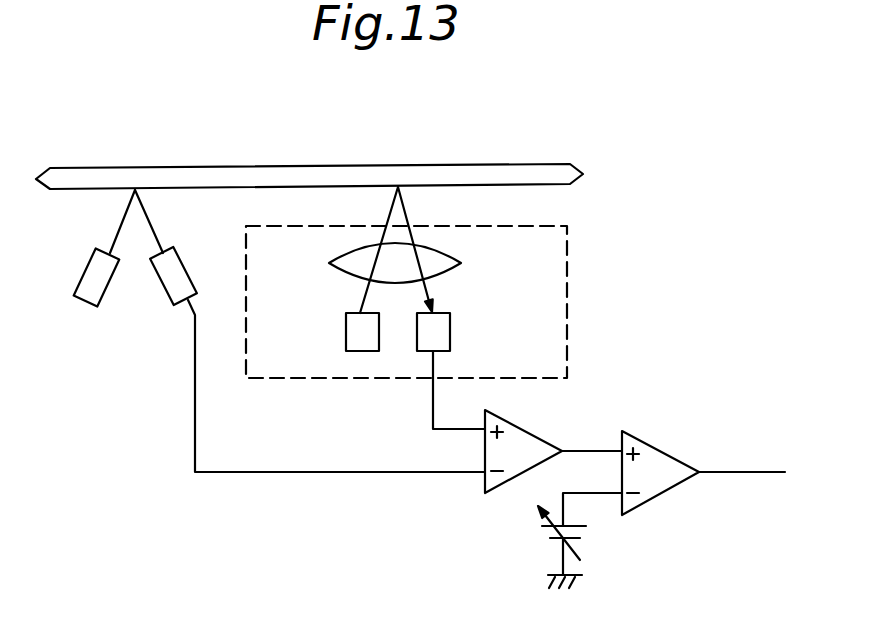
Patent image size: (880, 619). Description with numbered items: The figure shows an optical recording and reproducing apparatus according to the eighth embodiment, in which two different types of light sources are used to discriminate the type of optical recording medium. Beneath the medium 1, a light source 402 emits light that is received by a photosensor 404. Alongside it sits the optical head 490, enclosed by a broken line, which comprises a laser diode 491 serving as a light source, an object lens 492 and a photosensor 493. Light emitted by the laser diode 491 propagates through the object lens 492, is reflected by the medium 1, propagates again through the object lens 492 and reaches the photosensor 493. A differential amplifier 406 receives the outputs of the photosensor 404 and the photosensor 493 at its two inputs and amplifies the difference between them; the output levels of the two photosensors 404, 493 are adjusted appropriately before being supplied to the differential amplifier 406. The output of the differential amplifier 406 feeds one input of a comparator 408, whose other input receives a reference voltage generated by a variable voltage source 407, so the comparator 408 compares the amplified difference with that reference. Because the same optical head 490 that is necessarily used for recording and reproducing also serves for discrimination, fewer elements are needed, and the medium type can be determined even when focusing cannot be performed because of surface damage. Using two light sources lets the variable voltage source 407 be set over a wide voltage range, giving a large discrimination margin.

The medium 1 is at (481, 164).
The light source 402 is at (83, 276).
The photosensor 404 is at (163, 284).
The differential amplifier 406 is at (522, 427).
The variable voltage source 407 is at (587, 535).
The comparator 408 is at (667, 452).
The optical head 490 is at (567, 290).
The laser diode 491 is at (346, 331).
The object lens 492 is at (452, 253).
The photosensor 493 is at (450, 331).